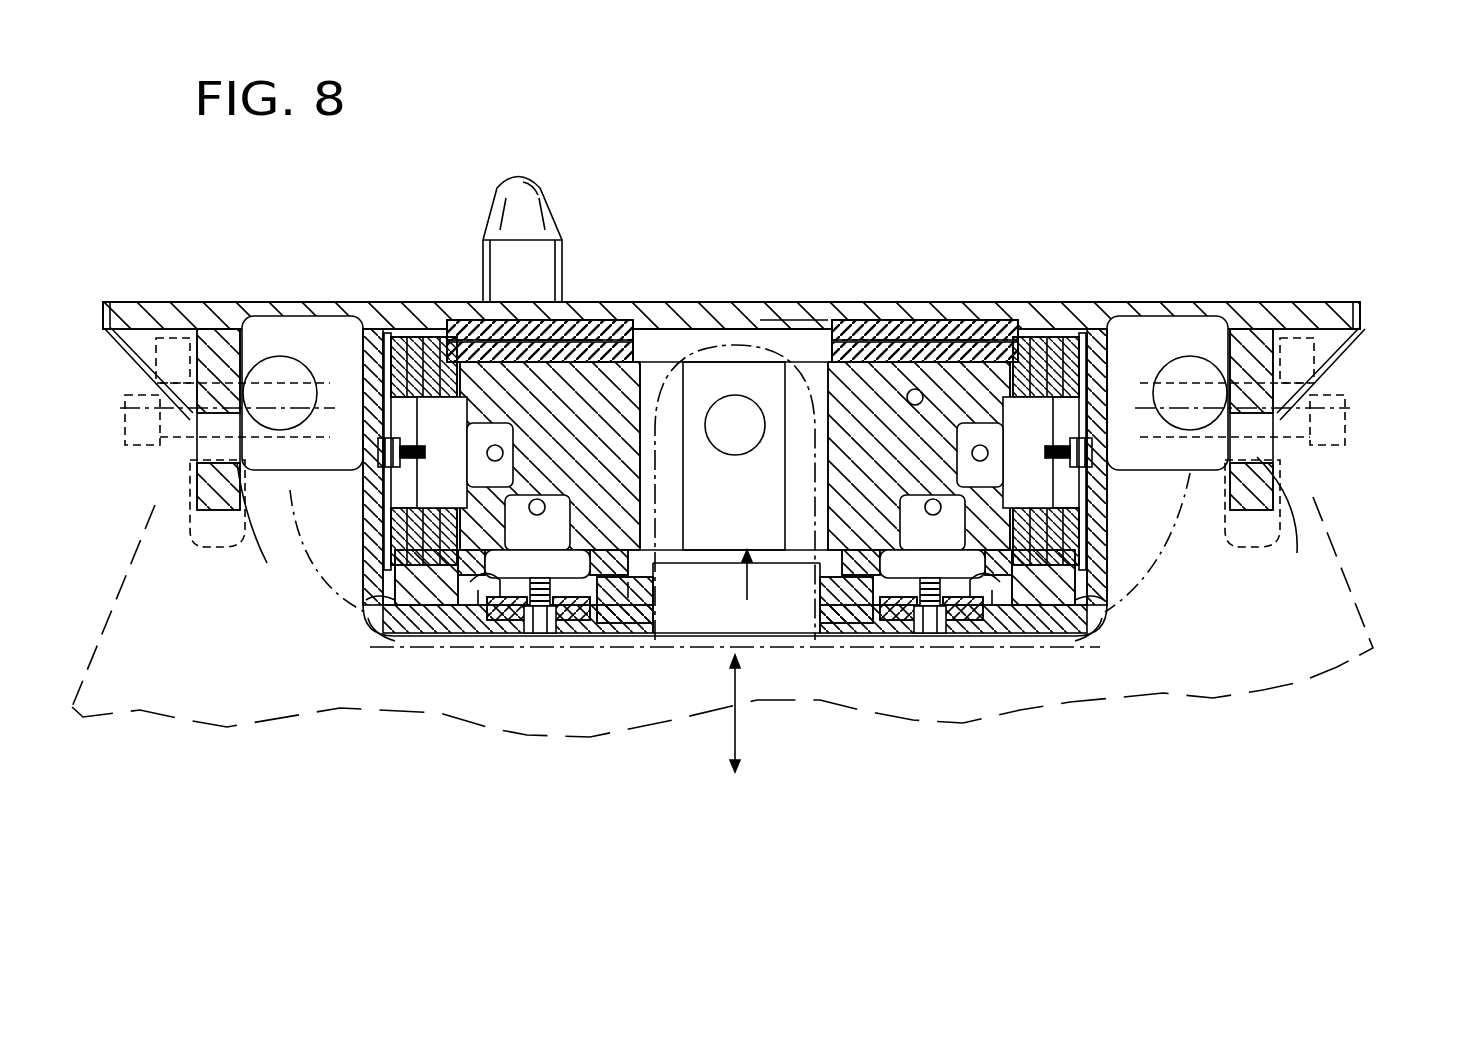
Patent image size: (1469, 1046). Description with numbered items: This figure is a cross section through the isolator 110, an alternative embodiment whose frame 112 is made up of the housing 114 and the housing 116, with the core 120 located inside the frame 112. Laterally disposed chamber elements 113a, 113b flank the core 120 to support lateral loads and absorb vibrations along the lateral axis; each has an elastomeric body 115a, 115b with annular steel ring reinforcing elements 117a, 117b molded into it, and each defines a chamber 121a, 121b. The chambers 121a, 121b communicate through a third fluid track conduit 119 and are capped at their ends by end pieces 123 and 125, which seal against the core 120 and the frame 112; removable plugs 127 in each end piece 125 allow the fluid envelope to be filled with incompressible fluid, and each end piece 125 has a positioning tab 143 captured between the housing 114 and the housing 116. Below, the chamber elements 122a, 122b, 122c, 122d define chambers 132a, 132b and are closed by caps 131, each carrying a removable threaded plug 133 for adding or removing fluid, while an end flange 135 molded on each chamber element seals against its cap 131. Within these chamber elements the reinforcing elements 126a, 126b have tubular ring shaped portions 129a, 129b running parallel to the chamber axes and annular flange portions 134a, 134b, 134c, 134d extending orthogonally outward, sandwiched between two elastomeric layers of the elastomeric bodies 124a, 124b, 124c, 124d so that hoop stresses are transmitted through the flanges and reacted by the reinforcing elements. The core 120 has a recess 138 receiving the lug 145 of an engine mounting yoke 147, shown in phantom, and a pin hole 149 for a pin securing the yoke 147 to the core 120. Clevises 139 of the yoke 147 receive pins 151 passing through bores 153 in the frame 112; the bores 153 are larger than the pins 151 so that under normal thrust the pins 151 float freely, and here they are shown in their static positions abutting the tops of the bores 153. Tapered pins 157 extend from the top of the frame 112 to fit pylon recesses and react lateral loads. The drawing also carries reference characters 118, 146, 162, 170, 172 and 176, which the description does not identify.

The isolator 110 is at (302, 206).
The frame 112 is at (1033, 300).
The lateral chamber element 113a is at (400, 320).
The lateral chamber element 113b is at (1076, 322).
The housing 114 is at (360, 622).
The elastomeric body 115a is at (444, 452).
The elastomeric body 115b is at (1037, 452).
The housing 116 is at (275, 302).
The annular steel ring reinforcing element 117a is at (375, 603).
The annular steel ring reinforcing element 117b is at (1097, 603).
The passage 118 is at (757, 588).
The third fluid track conduit 119 is at (486, 449).
The core 120 is at (660, 508).
The chamber 121a is at (382, 497).
The chamber 121b is at (1090, 497).
The chamber element 122a is at (1043, 624).
The chamber element 122b is at (416, 626).
The chamber element 122c is at (931, 312).
The chamber element 122d is at (591, 312).
The end piece 123 is at (430, 335).
The elastomeric body 124a is at (855, 553).
The elastomeric body 124b is at (628, 592).
The elastomeric body 124c is at (781, 318).
The elastomeric body 124d is at (668, 393).
The end piece 125 is at (367, 358).
The reinforcing element 126a is at (960, 622).
The reinforcing element 126b is at (520, 605).
The removable plug 127 is at (377, 451).
The tubular ring shaped portion 129a is at (835, 622).
The tubular ring shaped portion 129b is at (598, 620).
The cap 131 is at (562, 622).
The chamber 132a is at (953, 576).
The chamber 132b is at (559, 576).
The removable threaded plug 133 is at (538, 635).
The annular flange portion 134a is at (1102, 644).
The annular flange portion 134b is at (380, 632).
The annular flange portion 134c is at (1040, 318).
The annular flange portion 134d is at (517, 318).
The end flange 135 is at (628, 320).
The recess 138 is at (828, 496).
The clevis 139 is at (156, 504).
The positioning tab 143 is at (372, 537).
The lug 145 is at (680, 320).
The flange 146 is at (165, 302).
The engine mounting yoke 147 is at (1346, 539).
The pin hole 149 is at (740, 450).
The pin 151 is at (150, 393).
The bore 153 is at (774, 524).
The tapered pin 157 is at (490, 217).
The hole 162 is at (880, 320).
The plate 170 is at (932, 522).
The plate 172 is at (537, 522).
The direction of movement 176 is at (746, 731).